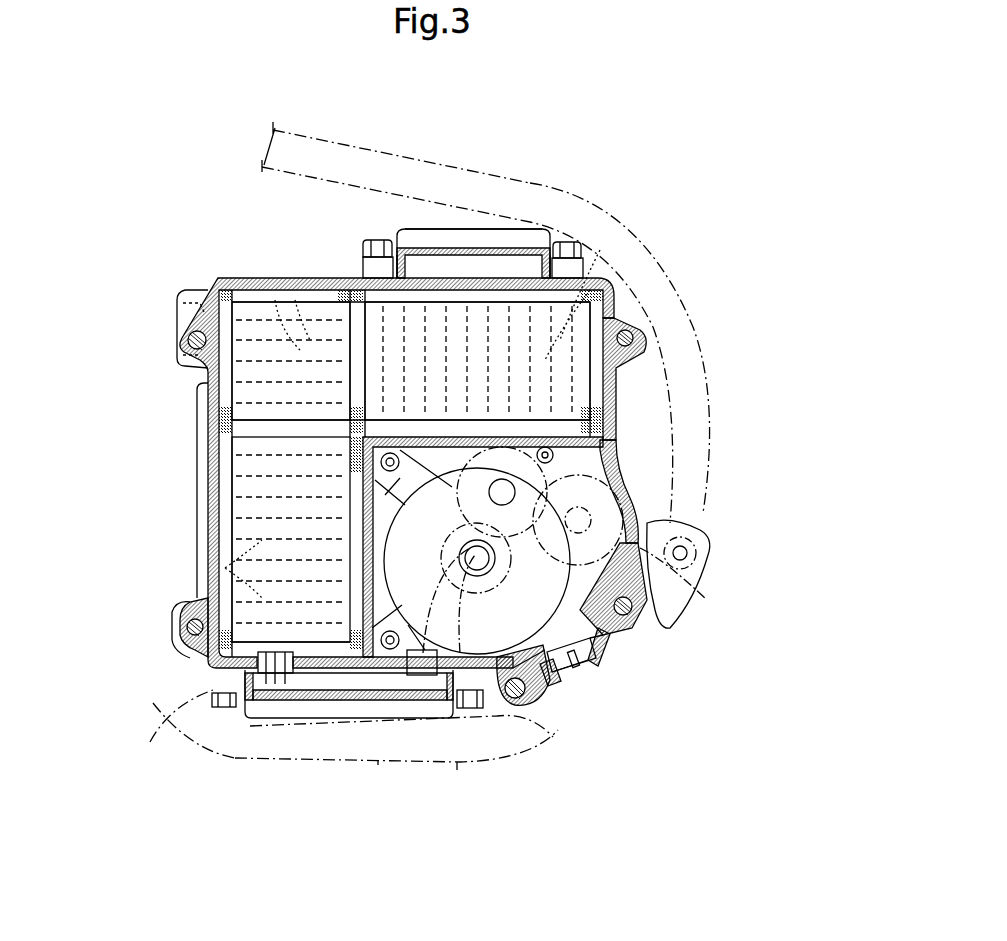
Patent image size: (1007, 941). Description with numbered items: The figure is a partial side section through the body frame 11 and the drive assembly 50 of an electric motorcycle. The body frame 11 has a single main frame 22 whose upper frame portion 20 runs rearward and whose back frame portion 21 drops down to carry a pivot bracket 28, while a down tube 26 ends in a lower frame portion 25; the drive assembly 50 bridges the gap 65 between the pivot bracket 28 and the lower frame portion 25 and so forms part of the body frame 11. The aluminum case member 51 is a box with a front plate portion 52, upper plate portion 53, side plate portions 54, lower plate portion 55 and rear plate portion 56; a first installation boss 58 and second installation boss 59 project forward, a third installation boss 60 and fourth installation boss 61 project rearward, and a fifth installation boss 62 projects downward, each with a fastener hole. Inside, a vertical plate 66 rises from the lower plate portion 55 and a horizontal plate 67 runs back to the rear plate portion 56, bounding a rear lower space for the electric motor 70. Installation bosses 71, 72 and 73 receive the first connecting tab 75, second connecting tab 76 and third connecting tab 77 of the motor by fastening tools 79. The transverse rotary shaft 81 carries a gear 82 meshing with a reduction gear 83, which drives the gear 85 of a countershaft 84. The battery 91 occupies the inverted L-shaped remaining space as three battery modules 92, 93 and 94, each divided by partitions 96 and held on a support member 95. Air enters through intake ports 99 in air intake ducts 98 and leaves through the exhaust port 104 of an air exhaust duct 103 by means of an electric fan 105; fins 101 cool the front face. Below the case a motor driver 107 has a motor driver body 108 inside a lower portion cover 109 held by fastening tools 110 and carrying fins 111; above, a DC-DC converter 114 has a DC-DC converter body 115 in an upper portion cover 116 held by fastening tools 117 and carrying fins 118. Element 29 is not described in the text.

The body frame 11 is at (527, 511).
The upper frame portion 20 is at (283, 127).
The back frame portion 21 is at (698, 333).
The main frame 22 is at (644, 212).
The lower frame portion 25 is at (378, 765).
The down tube 26 is at (457, 770).
The pivot bracket 28 is at (705, 564).
The bracket bolt hole 29 is at (690, 553).
The drive assembly 50 is at (211, 266).
The case member 51 is at (195, 662).
The front plate portion 52 is at (360, 468).
The upper plate portion 53 is at (333, 280).
The side plate portion 54 is at (180, 612).
The lower plate portion 55 is at (343, 675).
The rear plate portion 56 is at (622, 430).
The first installation boss 58 is at (186, 345).
The second installation boss 59 is at (182, 635).
The third installation boss 60 is at (645, 333).
The fourth installation boss 61 is at (652, 618).
The fifth installation boss 62 is at (507, 708).
The gap 65 is at (555, 688).
The vertical plate 66 is at (292, 532).
The horizontal plate 67 is at (425, 250).
The electric motor 70 is at (532, 690).
The installation boss 71 is at (430, 652).
The installation boss 72 is at (400, 470).
The installation boss 73 is at (585, 458).
The first connecting tab 75 is at (383, 672).
The second connecting tab 76 is at (380, 495).
The third connecting tab 77 is at (600, 482).
The fastening tool 79 is at (232, 433).
The rotary shaft 81 is at (445, 660).
The gear 82 is at (460, 650).
The reduction gear 83 is at (484, 345).
The countershaft 84 is at (700, 500).
The gear 85 is at (690, 580).
The battery 91 is at (266, 286).
The battery module 92 is at (262, 663).
The battery module 93 is at (205, 382).
The battery module 94 is at (645, 362).
The support member 95 is at (243, 300).
The partitions 96 is at (295, 300).
The air intake duct 98 is at (187, 290).
The intake port 99 is at (192, 307).
The fins 101 is at (197, 545).
The air exhaust duct 103 is at (606, 652).
The exhaust port 104 is at (592, 665).
The electric fan 105 is at (565, 682).
The motor driver 107 is at (258, 690).
The motor driver body 108 is at (293, 692).
The lower portion cover 109 is at (240, 728).
The fastening tools 110 is at (216, 700).
The fins 111 is at (302, 712).
The DC-DC converter 114 is at (525, 222).
The DC-DC converter body 115 is at (450, 250).
The upper portion cover 116 is at (397, 247).
The fastening tools 117 is at (375, 242).
The fins 118 is at (538, 240).